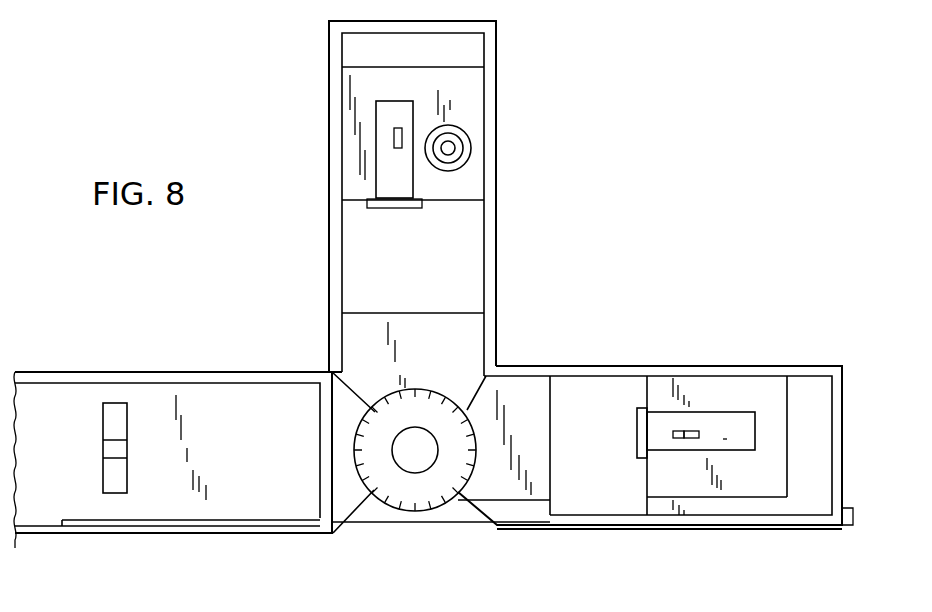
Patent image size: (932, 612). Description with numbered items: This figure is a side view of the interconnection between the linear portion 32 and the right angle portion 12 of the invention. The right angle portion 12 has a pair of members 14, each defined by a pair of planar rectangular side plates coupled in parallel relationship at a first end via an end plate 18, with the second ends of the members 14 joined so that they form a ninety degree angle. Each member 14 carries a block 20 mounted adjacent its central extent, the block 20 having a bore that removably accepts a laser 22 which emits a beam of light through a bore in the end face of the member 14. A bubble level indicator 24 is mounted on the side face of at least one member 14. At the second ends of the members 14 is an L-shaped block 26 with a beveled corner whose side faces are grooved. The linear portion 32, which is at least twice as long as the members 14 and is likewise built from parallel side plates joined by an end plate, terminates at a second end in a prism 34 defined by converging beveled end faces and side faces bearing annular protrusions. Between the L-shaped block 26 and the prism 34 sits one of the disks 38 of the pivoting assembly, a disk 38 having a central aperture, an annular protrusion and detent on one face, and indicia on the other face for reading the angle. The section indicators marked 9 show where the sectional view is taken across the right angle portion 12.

The section line 9- 9 is at (722, 355).
The right angle portion 12 is at (807, 527).
The members 14 is at (490, 181).
The end plate 18 is at (842, 390).
The block 20 is at (762, 392).
The laser 22 is at (399, 109).
The bubble level indicator 24 is at (462, 147).
The L-shaped block 26 is at (537, 407).
The linear portion 32 is at (95, 378).
The prism 34 is at (345, 495).
The disks 38 is at (500, 372).